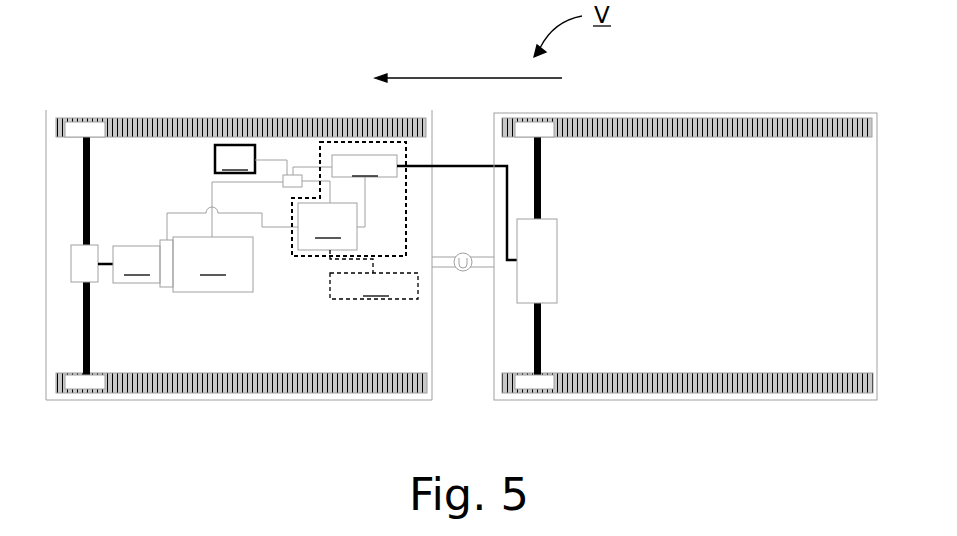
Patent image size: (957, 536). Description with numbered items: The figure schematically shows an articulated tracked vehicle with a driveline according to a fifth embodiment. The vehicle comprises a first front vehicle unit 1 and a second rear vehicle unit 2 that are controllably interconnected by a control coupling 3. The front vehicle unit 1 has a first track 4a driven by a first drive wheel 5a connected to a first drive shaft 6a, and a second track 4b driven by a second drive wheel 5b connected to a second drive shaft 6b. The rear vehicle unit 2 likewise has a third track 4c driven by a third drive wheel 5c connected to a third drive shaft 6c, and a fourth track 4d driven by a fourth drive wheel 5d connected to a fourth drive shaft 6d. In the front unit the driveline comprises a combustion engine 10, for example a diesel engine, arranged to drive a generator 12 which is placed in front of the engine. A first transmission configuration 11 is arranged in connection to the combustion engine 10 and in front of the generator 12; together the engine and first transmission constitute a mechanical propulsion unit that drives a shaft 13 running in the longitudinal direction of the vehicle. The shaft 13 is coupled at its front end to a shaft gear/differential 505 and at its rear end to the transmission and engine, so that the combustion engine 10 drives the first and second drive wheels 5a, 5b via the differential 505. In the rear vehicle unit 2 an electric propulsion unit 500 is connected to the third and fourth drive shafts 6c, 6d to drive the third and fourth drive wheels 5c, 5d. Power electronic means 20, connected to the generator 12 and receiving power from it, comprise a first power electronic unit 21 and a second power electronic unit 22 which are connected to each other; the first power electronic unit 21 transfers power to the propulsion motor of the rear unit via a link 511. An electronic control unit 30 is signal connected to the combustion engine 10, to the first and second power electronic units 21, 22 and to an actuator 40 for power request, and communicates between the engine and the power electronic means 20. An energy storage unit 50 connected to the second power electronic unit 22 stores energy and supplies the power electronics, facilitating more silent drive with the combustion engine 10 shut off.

The first front vehicle unit 1 is at (284, 102).
The second rear vehicle unit 2 is at (731, 105).
The control coupling 3 is at (469, 278).
The first track 4a is at (236, 128).
The second track 4b is at (277, 380).
The third track 4c is at (830, 128).
The fourth track 4d is at (735, 382).
The first drive wheel 5a is at (88, 128).
The second drive wheel 5b is at (88, 389).
The third drive wheel 5c is at (542, 128).
The fourth drive wheel 5d is at (538, 388).
The first drive shaft 6a is at (92, 150).
The second drive shaft 6b is at (90, 365).
The third drive shaft 6c is at (541, 150).
The fourth drive shaft 6d is at (541, 358).
The combustion engine 10 is at (228, 237).
The first transmission configuration 11 is at (136, 264).
The generator 12 is at (166, 288).
The shaft 13 is at (110, 268).
The power electronic means 20 is at (308, 257).
The first power electronic unit 21 is at (364, 189).
The second power electronic unit 22 is at (327, 226).
The electronic control unit 30 is at (287, 188).
The actuator 40 is at (251, 160).
The energy storage unit 50 is at (374, 274).
The electric propulsion unit 500 is at (568, 271).
The shaft gear/differential 505 is at (83, 260).
The link 511 is at (455, 167).